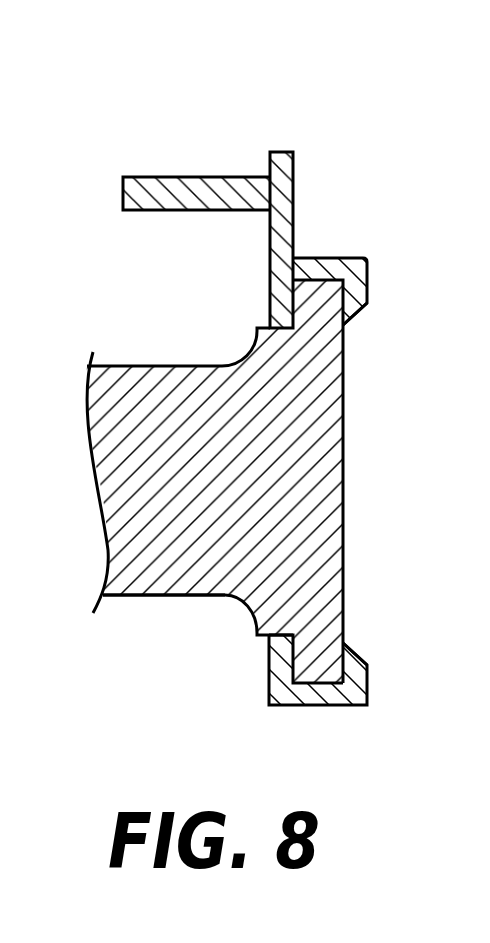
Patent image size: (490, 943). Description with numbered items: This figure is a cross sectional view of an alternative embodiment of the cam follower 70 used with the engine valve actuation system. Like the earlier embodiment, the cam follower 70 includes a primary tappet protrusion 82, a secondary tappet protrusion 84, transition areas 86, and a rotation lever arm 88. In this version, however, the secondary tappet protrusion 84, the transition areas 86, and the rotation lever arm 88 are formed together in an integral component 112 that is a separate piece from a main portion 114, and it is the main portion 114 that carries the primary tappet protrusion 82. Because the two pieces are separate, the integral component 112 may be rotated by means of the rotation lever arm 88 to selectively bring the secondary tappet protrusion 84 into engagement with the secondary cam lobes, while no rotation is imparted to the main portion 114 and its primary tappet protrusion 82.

The cam follower 70 is at (227, 114).
The primary tappet protrusion 82 is at (343, 453).
The secondary tappet protrusion 84 is at (368, 277).
The transition areas 86 is at (353, 314).
The rotation lever arm 88 is at (153, 176).
The integral component 112 is at (313, 238).
The main portion 114 is at (153, 582).